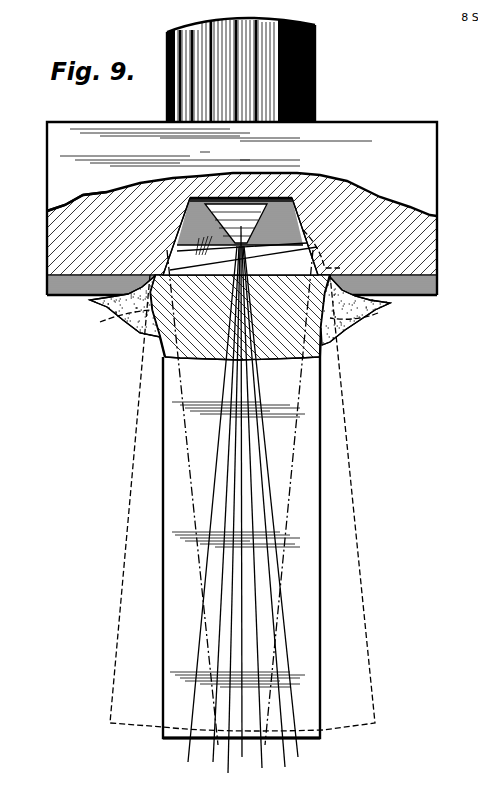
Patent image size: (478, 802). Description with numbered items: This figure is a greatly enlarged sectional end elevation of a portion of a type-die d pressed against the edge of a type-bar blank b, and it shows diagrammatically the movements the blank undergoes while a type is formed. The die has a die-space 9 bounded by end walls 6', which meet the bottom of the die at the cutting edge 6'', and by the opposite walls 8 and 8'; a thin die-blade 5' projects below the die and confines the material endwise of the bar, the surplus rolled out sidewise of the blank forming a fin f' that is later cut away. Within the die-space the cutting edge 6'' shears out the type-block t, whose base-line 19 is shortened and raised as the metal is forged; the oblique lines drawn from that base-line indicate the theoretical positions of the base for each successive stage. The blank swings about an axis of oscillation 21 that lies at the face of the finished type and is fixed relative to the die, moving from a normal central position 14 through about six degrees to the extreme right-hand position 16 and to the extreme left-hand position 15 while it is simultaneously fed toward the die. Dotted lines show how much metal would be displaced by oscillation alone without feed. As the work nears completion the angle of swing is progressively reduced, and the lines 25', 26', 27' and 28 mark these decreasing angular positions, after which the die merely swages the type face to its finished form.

The type-die d is at (53, 165).
The die-space 9 is at (185, 212).
The axis of oscillation 21 is at (238, 202).
The wall of the die-space 8 is at (242, 195).
The end wall of the die-space 6' is at (239, 221).
The cutting edge 6'' is at (97, 224).
The base-line of the type-block 19 is at (140, 349).
The type-block t is at (243, 257).
The wall of the die-space 8' is at (289, 317).
The fin f' is at (236, 314).
The die-blade 5' is at (246, 302).
The type-bar blank b is at (172, 447).
The extreme left-hand position line 15 is at (201, 514).
The angular position 26' is at (217, 514).
The angular position 28 is at (228, 520).
The normal central position line 14 is at (243, 499).
The angular position 27' is at (258, 516).
The angular position 25' is at (274, 516).
The extreme right-hand position line 16 is at (282, 507).